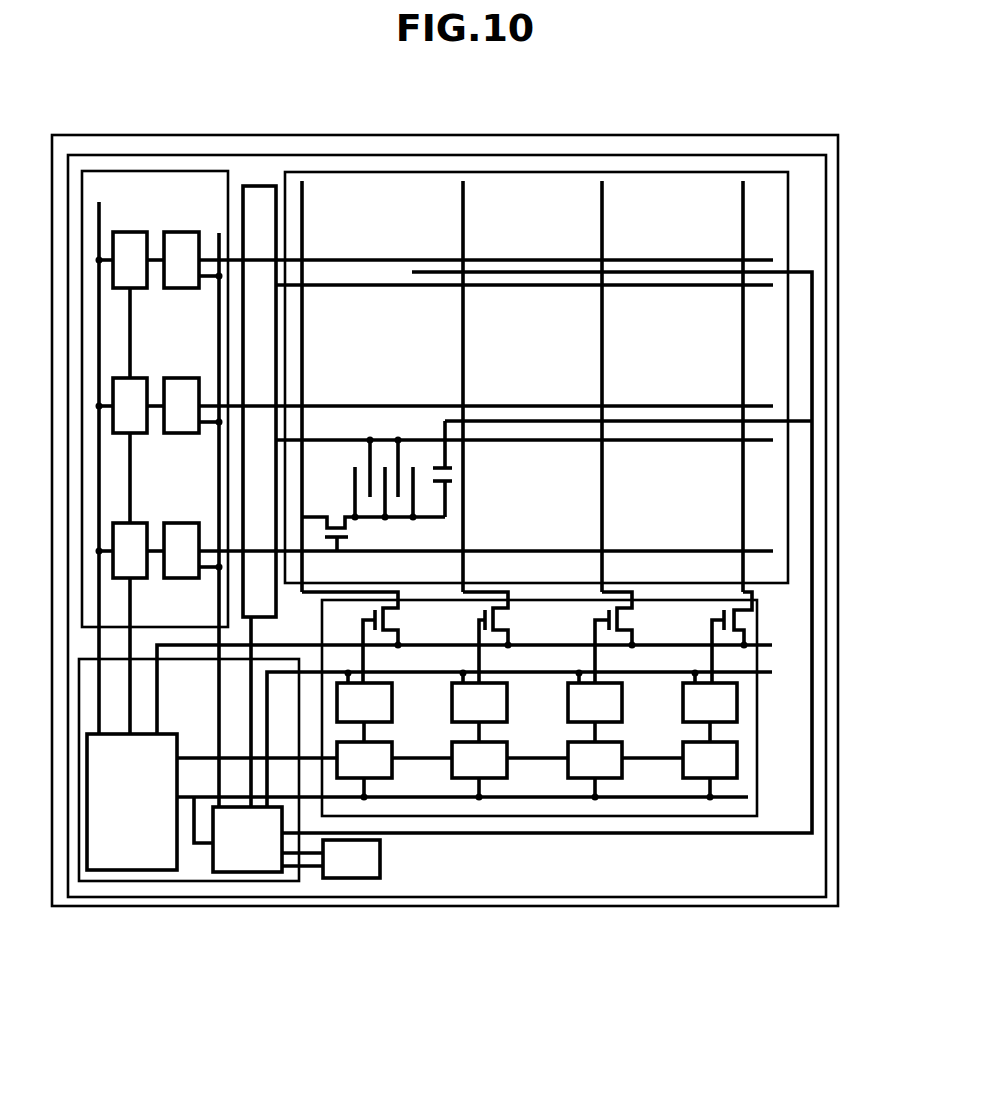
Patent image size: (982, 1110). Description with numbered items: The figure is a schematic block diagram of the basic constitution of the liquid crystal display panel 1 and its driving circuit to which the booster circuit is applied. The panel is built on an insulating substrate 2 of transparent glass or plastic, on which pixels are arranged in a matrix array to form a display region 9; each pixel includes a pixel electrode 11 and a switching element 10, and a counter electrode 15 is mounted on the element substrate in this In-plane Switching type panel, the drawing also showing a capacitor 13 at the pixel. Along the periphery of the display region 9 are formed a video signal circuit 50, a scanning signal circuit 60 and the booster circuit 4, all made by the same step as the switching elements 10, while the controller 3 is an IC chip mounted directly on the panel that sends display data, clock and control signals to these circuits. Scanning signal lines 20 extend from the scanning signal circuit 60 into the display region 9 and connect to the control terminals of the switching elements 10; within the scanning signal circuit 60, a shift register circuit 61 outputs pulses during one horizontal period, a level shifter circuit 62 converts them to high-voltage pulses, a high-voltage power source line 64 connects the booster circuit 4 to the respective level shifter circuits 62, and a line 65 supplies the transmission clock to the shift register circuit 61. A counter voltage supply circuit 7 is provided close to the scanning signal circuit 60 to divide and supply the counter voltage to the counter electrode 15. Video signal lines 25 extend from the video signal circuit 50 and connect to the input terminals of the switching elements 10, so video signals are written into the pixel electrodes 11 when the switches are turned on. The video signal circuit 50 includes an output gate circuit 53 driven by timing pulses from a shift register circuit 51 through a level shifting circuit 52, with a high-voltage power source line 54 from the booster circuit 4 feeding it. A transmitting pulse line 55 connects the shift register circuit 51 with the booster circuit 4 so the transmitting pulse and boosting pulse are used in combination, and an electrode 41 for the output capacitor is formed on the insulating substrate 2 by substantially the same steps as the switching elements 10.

The liquid crystal display panel 1 is at (531, 140).
The insulating substrate 2 is at (621, 155).
The controller 3 is at (110, 843).
The booster circuit 4 is at (255, 840).
The counter voltage supply circuit 7 is at (258, 205).
The display region 9 is at (698, 178).
The switching element 10 is at (353, 533).
The pixel electrode 11 is at (418, 497).
The storage capacitor 13 is at (450, 478).
The counter electrode 15 is at (384, 452).
The scanning signal line 20 is at (360, 257).
The video signal line 25 is at (302, 313).
The electrode for output capacitor 41 is at (355, 858).
The video signal circuit 50 is at (482, 772).
The shift register circuit 51 is at (717, 762).
The level shifting circuit 52 is at (722, 707).
The output gate circuit 53 is at (497, 622).
The high-voltage power source line 54 is at (738, 665).
The transmitting pulse line 55 is at (550, 800).
The scanning signal circuit 60 is at (155, 444).
The shift register circuit 61 is at (157, 527).
The level shifter circuit 62 is at (173, 383).
The high-voltage power source line 64 is at (210, 247).
The line 65 is at (102, 505).